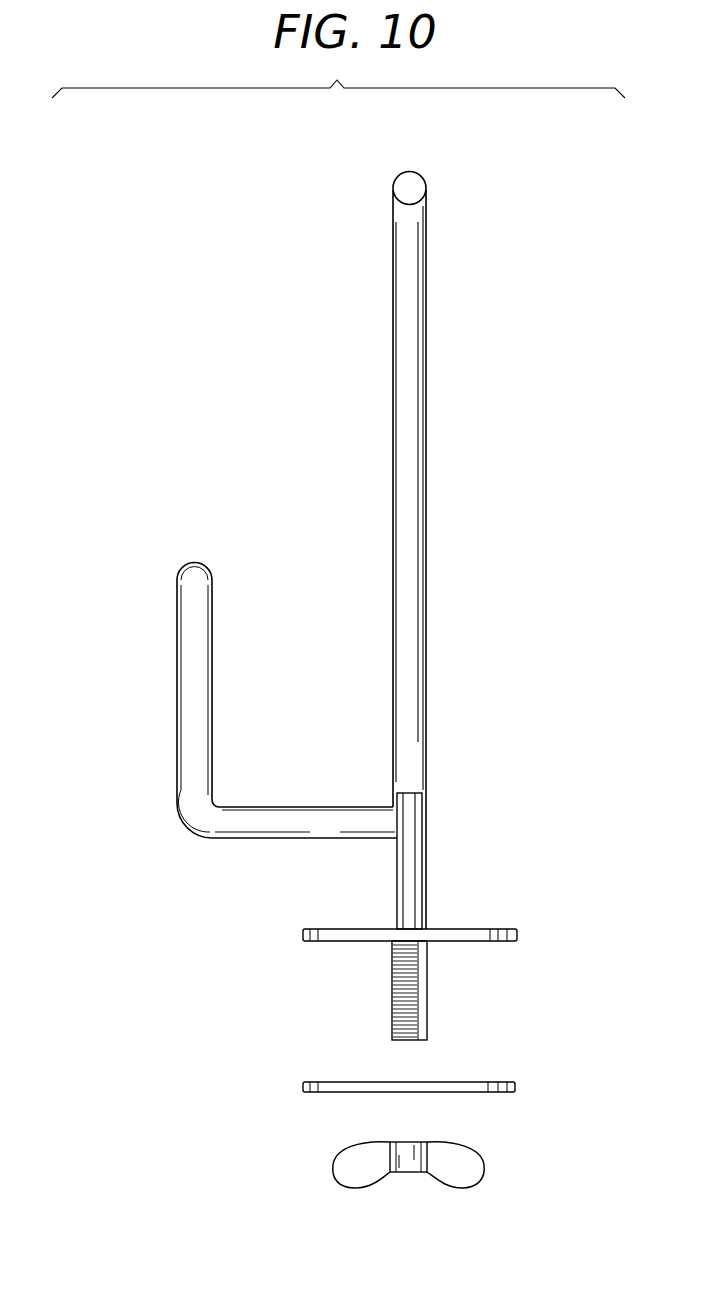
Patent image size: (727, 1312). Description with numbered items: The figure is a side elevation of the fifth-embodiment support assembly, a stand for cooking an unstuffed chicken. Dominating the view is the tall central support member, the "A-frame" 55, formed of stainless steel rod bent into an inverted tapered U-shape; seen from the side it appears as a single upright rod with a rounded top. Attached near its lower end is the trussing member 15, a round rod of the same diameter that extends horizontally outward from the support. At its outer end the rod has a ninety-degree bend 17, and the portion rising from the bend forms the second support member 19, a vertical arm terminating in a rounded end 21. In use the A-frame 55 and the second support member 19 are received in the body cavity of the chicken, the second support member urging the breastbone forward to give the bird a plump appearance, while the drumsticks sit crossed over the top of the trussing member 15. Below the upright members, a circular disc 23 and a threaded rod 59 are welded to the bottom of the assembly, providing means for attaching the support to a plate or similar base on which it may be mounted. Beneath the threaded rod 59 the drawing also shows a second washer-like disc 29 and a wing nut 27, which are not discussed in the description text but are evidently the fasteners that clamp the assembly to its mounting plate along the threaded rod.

The A-frame 55 is at (421, 180).
The rounded end 21 is at (180, 568).
The second support member 19 is at (177, 635).
The bend 17 is at (188, 830).
The trussing member 15 is at (288, 840).
The circular disc 23 is at (518, 933).
The threaded rod 59 is at (428, 990).
The washer 29 is at (517, 1086).
The wing nut 27 is at (478, 1182).